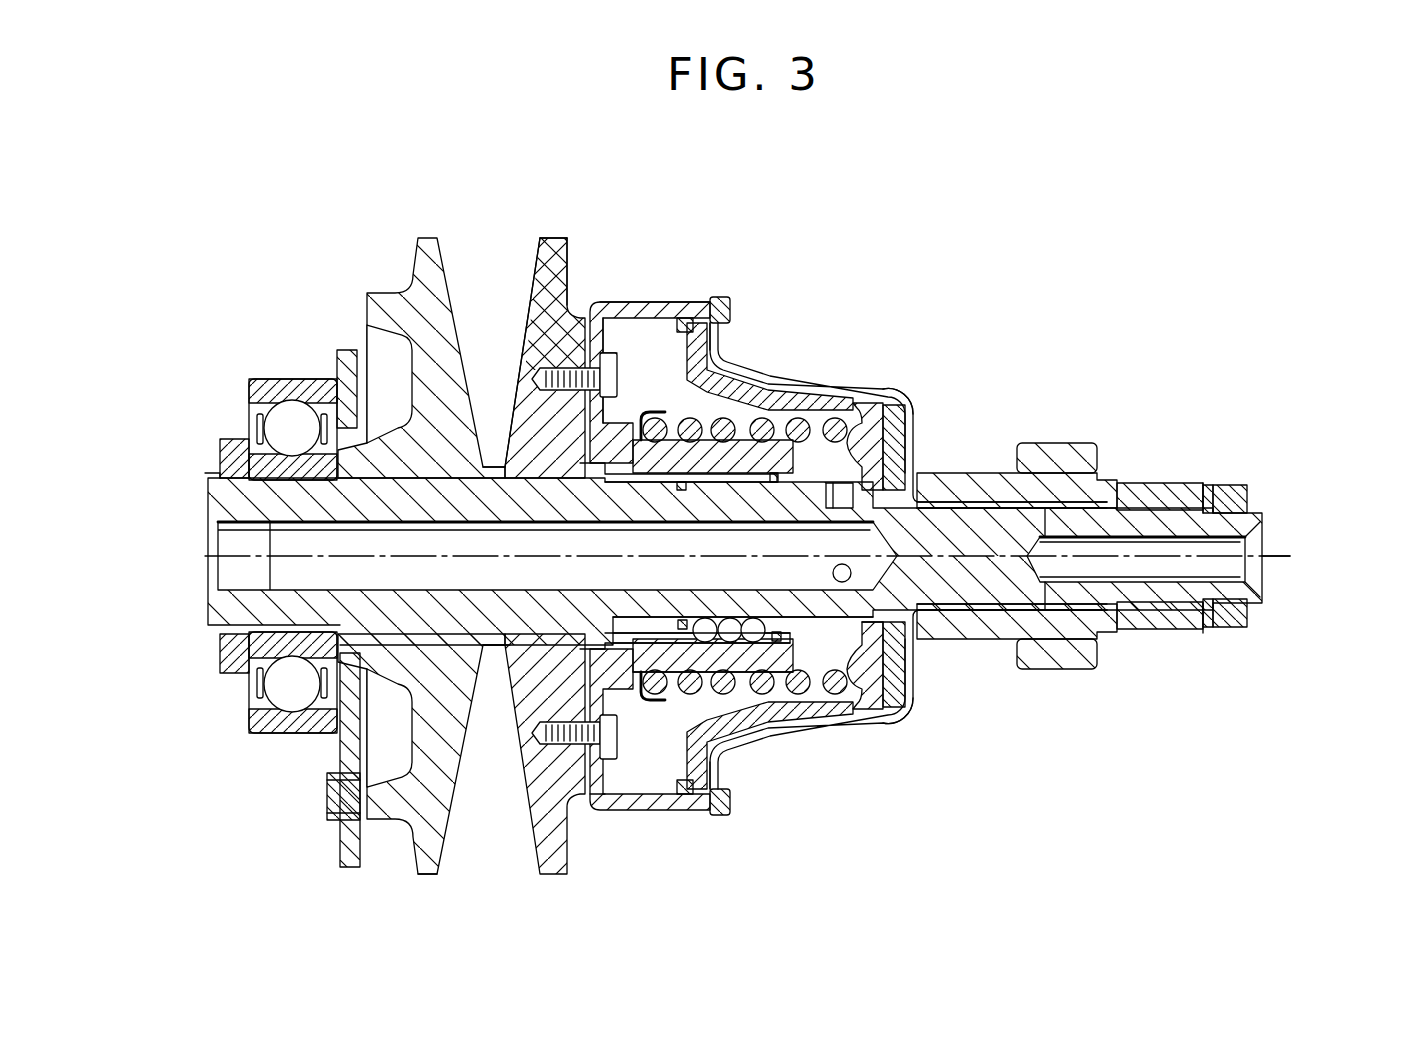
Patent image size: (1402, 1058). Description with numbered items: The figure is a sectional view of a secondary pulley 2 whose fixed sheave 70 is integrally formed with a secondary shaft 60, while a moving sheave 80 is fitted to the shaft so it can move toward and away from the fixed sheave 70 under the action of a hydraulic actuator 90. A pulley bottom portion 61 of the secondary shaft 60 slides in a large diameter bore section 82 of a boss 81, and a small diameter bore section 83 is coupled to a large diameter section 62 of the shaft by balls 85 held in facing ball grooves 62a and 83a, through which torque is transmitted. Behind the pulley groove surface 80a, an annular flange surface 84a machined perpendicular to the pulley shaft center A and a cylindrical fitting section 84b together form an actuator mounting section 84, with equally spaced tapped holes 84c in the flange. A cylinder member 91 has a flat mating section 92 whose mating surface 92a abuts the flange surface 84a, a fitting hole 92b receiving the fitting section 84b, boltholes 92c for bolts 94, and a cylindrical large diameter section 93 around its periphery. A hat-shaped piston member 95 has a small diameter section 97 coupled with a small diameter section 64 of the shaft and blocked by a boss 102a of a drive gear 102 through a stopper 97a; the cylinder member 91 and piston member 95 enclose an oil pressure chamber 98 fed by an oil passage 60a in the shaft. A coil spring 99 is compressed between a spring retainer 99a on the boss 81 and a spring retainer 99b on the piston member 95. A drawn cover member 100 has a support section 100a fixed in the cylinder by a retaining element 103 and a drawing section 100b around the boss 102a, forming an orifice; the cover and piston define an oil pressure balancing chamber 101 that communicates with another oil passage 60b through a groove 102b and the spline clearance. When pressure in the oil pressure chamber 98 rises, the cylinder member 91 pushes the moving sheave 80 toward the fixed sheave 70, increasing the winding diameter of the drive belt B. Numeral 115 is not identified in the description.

The secondary pulley 2 is at (531, 218).
The secondary shaft 60 is at (245, 500).
The oil passage 60a is at (232, 554).
The oil passage 60b is at (1245, 550).
The pulley bottom portion 61 is at (493, 655).
The large diameter section 62 is at (812, 480).
The ball groove 62a is at (830, 628).
The small diameter section 64 is at (876, 712).
The fixed sheave 70 is at (400, 300).
The moving sheave 80 is at (560, 242).
The pulley groove surface 80a is at (548, 262).
The boss 81 is at (630, 752).
The large diameter bore section 82 is at (508, 706).
The small diameter bore section 83 is at (736, 455).
The ball groove 83a is at (690, 700).
The actuator mounting section 84 is at (555, 256).
The flange surface 84a is at (562, 322).
The fitting section 84b is at (528, 410).
The tapped holes 84c is at (575, 336).
The balls 85 is at (730, 802).
The hydraulic actuator 90 is at (778, 351).
The cylinder member 91 is at (660, 302).
The mating section 92 is at (600, 810).
The mating surface 92a is at (605, 325).
The fitting hole 92b is at (600, 632).
The boltholes 92c is at (552, 868).
The large diameter section 93 is at (713, 818).
The bolts 94 is at (618, 374).
The piston member 95 is at (884, 415).
The small diameter section 97 is at (1015, 472).
The stopper 97a is at (920, 406).
The oil pressure chamber 98 is at (672, 302).
The coil spring 99 is at (757, 642).
The spring retainer 99a is at (655, 700).
The spring retainer 99b is at (850, 732).
The cover member 100 is at (922, 426).
The support section 100a is at (714, 315).
The drawing section 100b is at (915, 468).
The oil pressure balancing chamber 101 is at (880, 387).
The drive gear 102 is at (1055, 468).
The boss 102a is at (1010, 672).
The groove 102b is at (910, 666).
The retaining element 103 is at (732, 303).
The nut 115 is at (1180, 490).
The pulley shaft center A is at (1276, 566).
The drive belt B is at (497, 874).